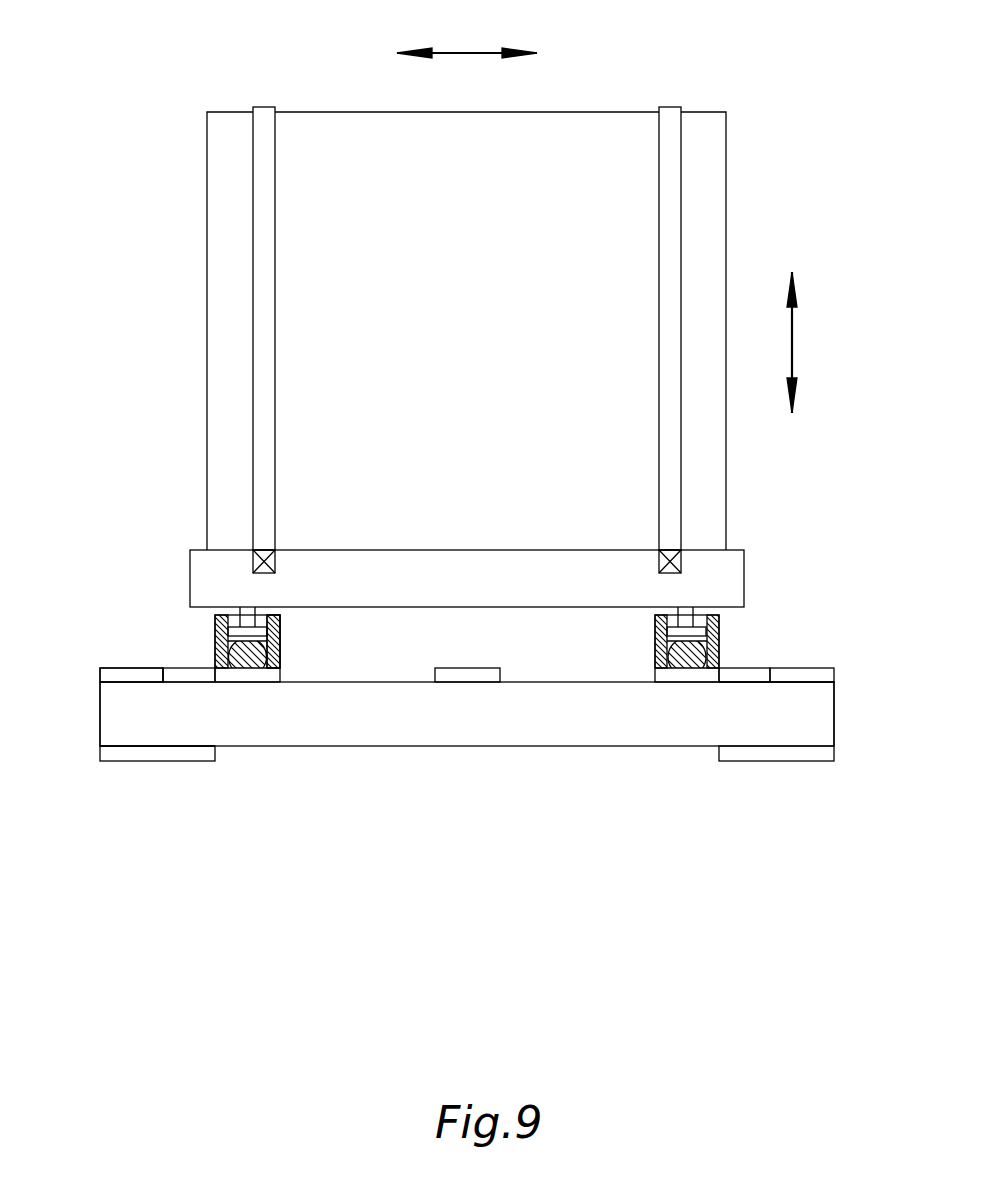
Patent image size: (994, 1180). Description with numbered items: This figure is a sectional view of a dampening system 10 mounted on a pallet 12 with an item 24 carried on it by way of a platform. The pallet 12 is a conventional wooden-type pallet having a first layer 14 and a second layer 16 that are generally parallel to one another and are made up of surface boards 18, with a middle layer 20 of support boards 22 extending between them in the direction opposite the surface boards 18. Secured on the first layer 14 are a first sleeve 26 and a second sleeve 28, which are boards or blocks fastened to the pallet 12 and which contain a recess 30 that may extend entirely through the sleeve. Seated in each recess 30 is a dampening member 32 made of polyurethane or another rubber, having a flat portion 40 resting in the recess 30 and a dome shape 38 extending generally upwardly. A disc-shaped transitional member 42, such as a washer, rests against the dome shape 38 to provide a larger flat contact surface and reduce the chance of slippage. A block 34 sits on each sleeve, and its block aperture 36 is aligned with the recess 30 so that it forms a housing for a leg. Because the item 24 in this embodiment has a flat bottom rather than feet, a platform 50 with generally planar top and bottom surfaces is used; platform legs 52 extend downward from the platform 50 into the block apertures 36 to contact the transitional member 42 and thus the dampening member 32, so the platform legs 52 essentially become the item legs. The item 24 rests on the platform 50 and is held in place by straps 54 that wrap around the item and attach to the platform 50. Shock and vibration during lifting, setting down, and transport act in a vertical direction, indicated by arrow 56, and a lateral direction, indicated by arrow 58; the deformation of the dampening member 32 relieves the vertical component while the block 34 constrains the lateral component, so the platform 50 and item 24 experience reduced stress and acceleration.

The dampening system 10 is at (111, 613).
The pallet 12 is at (807, 652).
The first layer 14 is at (117, 668).
The second layer 16 is at (125, 762).
The surface boards 18 is at (99, 676).
The middle layer 20 is at (853, 699).
The support boards 22 is at (479, 729).
The item 24 is at (222, 112).
The first sleeve 26 is at (722, 655).
The second sleeve 28 is at (280, 656).
The recess 30 is at (666, 651).
The dampening member 32 is at (718, 640).
The block 34 is at (660, 630).
The block aperture 36 is at (672, 614).
The dome shape 38 is at (222, 651).
The flat portion 40 is at (250, 670).
The transitional member 42 is at (272, 634).
The platform 50 is at (213, 573).
The platform legs 52 is at (248, 612).
The straps 54 is at (266, 292).
The vertical direction arrow 56 is at (795, 340).
The lateral direction arrow 58 is at (468, 53).